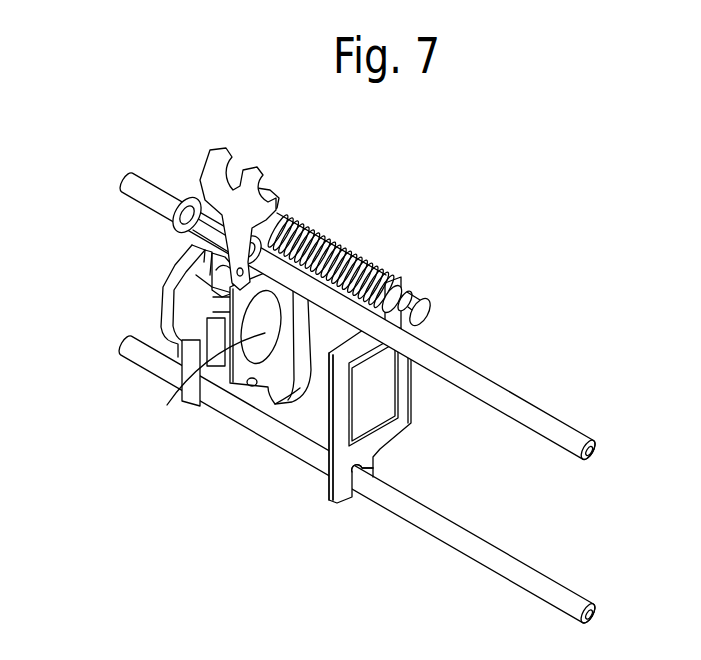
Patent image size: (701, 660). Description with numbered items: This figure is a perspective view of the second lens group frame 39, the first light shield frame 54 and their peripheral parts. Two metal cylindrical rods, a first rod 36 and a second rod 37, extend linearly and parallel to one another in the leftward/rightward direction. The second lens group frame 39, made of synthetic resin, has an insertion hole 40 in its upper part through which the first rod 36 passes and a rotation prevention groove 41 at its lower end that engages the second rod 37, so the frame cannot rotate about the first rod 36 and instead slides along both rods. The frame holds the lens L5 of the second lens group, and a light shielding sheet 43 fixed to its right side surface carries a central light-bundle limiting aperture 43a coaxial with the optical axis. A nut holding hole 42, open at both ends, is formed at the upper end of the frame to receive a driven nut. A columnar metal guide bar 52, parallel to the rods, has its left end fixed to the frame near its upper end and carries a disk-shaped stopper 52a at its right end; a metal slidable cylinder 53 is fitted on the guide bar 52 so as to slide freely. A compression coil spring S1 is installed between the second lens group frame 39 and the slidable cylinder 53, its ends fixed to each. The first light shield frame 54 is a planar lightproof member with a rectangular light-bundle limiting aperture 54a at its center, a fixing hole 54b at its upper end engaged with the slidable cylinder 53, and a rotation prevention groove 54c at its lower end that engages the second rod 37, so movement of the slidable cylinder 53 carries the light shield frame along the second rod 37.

The first rod 36 is at (537, 396).
The second rod 37 is at (133, 360).
The second lens group frame 39 is at (166, 307).
The insertion hole 40 is at (278, 203).
The rotation prevention groove 41 is at (208, 404).
The nut holding hole 42 is at (238, 172).
The light shielding sheet 43 is at (232, 386).
The light-bundle limiting aperture 43a is at (277, 366).
The guide bar 52 is at (416, 300).
The stopper 52a is at (428, 318).
The slidable cylinder 53 is at (410, 294).
The first light shield frame 54 is at (338, 456).
The light-bundle limiting aperture 54a is at (333, 445).
The fixing hole 54b is at (400, 282).
The rotation prevention groove 54c is at (360, 474).
The compression coil spring S1 is at (340, 243).
The lens L5 is at (206, 379).